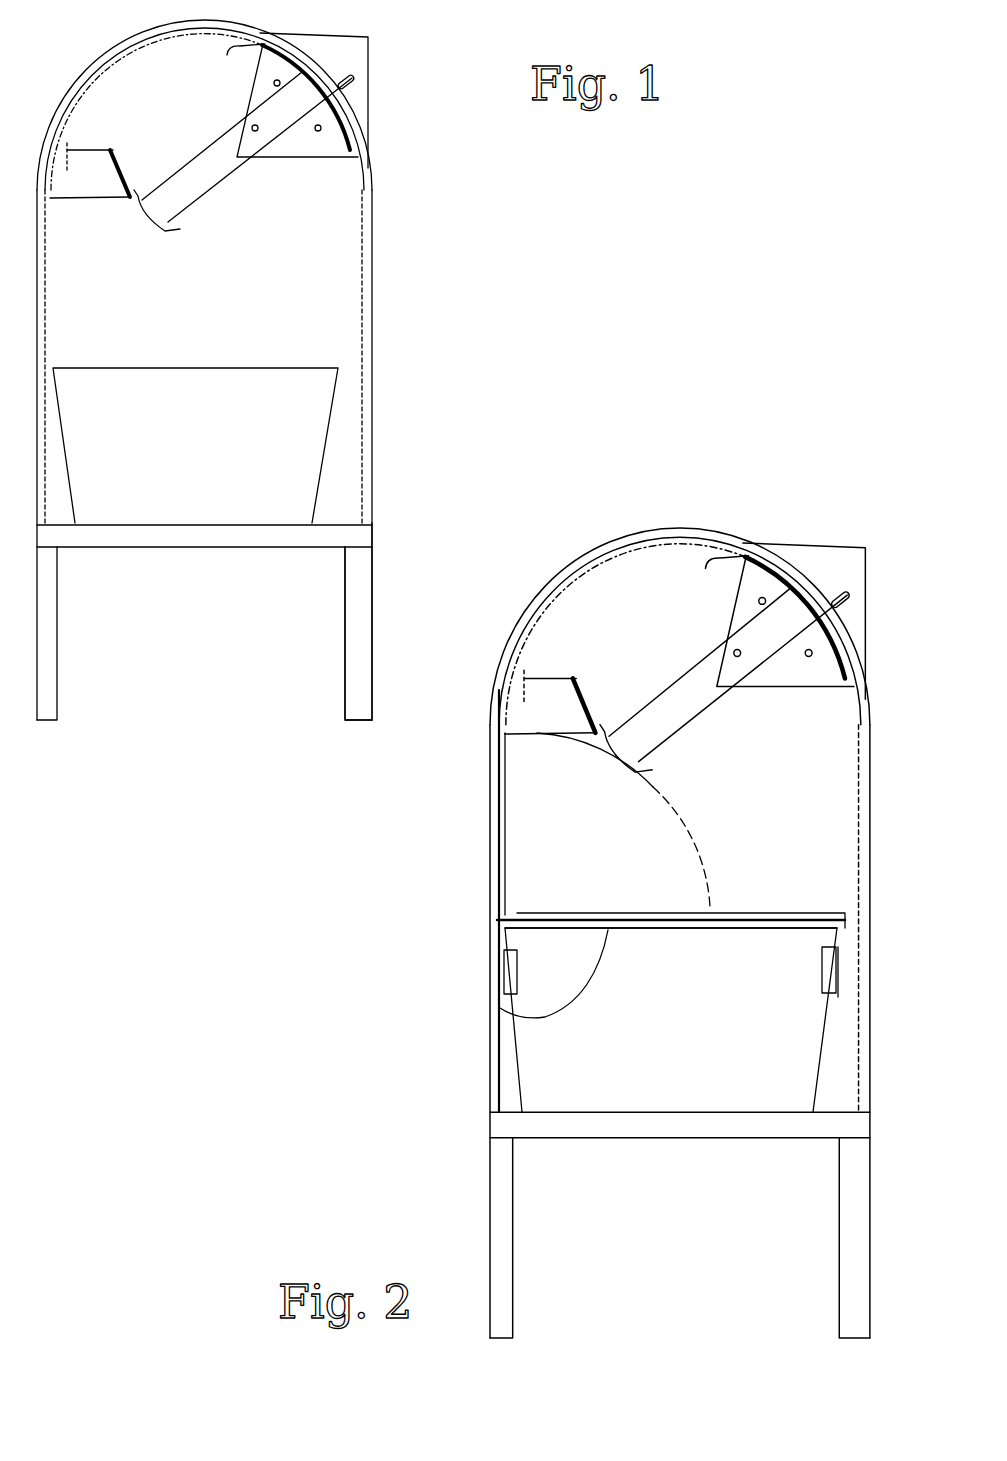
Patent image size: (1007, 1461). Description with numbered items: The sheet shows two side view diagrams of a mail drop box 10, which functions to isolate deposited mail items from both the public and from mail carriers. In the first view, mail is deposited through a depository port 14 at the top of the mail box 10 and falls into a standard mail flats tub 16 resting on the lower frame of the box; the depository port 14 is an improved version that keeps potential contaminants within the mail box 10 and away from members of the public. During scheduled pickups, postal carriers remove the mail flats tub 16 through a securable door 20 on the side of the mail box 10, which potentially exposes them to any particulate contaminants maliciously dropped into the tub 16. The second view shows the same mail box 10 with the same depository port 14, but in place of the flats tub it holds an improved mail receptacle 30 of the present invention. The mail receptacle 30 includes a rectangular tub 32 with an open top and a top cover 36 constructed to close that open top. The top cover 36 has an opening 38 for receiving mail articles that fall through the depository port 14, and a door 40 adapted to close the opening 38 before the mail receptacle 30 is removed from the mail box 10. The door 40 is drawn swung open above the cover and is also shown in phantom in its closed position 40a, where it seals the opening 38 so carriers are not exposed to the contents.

In FIG. 1, the mail drop box 10 is at (452, 228).
In FIG. 2, the mail drop box 10 is at (627, 545).
In FIG. 1, the depository port 14 is at (374, 42).
In FIG. 1, the standard mail flats tub 16 is at (228, 510).
In FIG. 1, the securable door 20 is at (363, 460).
In FIG. 2, the mail receptacle 30 is at (510, 1062).
In FIG. 2, the rectangular tub 32 is at (743, 1082).
In FIG. 2, the top cover 36 is at (802, 913).
In FIG. 2, the opening 38 is at (513, 1013).
In FIG. 2, the door 40 is at (502, 827).
In FIG. 2, the closed position 40a is at (570, 913).